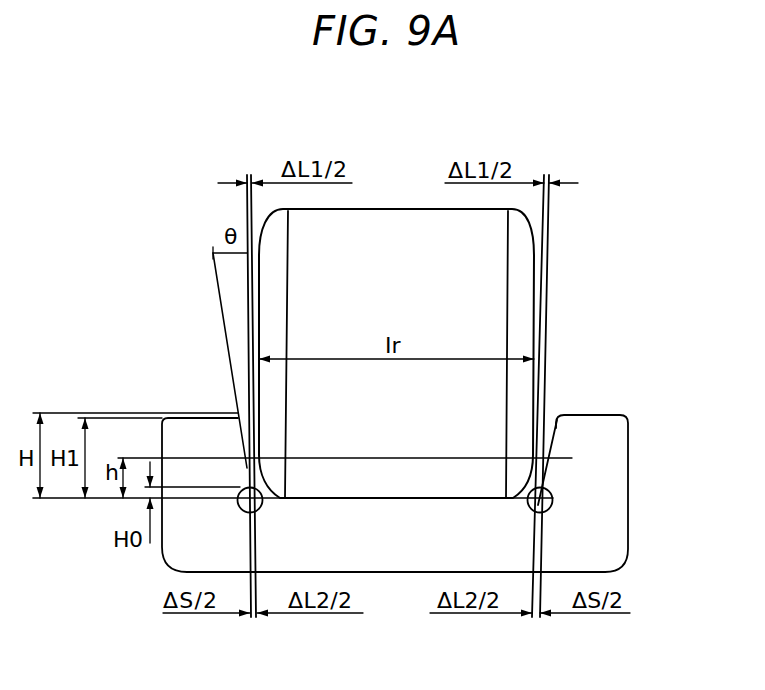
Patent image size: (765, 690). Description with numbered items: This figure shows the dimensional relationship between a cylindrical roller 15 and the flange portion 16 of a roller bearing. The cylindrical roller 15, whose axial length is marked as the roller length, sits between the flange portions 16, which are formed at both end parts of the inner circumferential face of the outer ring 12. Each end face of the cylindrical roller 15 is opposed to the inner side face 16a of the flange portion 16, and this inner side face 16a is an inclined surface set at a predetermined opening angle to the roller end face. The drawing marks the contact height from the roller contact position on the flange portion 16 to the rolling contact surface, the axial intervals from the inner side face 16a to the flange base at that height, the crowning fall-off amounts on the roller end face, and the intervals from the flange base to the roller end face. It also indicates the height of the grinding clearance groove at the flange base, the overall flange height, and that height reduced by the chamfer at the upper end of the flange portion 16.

The cylindrical roller 15 is at (396, 222).
The flange portion 16 is at (618, 477).
The inner side face 16a is at (552, 431).
The outer ring 12 is at (390, 576).